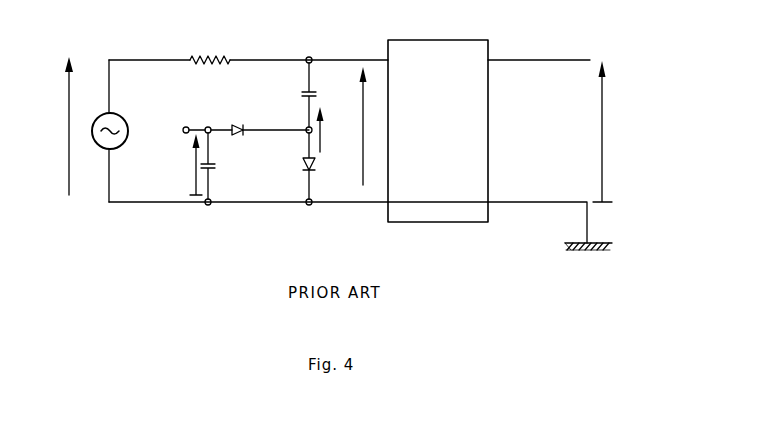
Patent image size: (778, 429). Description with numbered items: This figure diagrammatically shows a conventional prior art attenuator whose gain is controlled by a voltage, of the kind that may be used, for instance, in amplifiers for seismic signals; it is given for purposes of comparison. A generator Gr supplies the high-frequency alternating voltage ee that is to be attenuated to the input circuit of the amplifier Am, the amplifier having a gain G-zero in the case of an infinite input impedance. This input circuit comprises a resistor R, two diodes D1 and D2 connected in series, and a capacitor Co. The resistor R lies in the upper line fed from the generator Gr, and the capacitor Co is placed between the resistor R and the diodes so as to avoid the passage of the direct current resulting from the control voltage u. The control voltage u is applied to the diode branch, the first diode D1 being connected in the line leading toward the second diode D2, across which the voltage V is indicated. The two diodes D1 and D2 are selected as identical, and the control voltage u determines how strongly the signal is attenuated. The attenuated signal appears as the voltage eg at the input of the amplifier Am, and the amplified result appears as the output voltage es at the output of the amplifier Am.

The resistor R is at (210, 50).
The generator Gr is at (119, 131).
The first diode D1 is at (246, 120).
The second diode D2 is at (318, 166).
The capacitor Co is at (320, 92).
The amplifier Am is at (438, 131).
The control voltage u is at (198, 169).
The voltage across diode V is at (326, 129).
The alternating voltage ee is at (60, 126).
The input voltage of the amplifier eg is at (370, 126).
The output voltage es is at (607, 131).